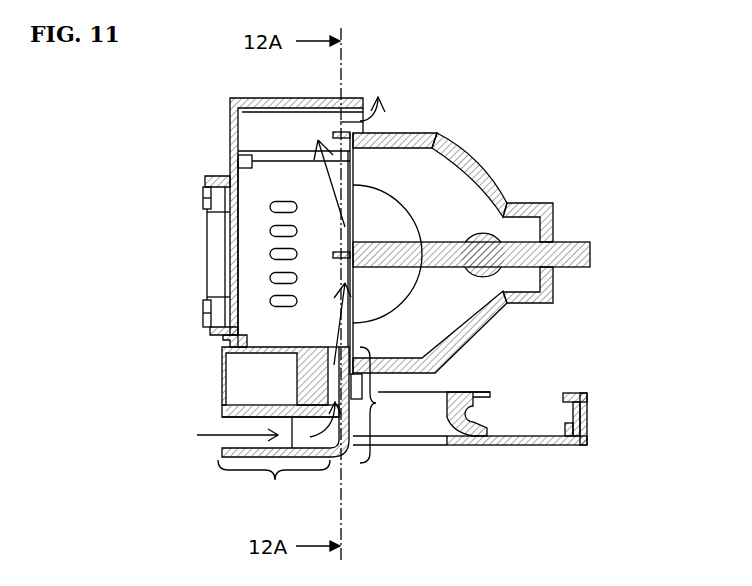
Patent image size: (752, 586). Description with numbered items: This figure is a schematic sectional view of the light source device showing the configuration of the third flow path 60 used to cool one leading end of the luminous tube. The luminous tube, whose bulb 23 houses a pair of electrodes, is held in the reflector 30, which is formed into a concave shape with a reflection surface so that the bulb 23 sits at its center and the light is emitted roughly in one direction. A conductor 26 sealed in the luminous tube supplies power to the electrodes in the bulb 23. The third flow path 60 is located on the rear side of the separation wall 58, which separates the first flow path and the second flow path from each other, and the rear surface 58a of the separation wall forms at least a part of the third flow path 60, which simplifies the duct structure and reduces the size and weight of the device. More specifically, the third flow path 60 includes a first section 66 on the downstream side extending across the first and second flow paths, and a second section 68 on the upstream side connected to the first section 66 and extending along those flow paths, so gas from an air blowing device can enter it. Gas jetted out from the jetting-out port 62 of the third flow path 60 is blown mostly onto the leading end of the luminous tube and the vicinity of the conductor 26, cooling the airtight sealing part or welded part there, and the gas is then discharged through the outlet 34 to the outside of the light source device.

The bulb 23 is at (480, 247).
The conductor 26 is at (366, 228).
The reflector 30 is at (480, 167).
The outlet 34 is at (353, 120).
The separation wall 58 is at (308, 375).
The rear surface of the separation wall 58a is at (352, 375).
The third flow path 60 is at (300, 427).
The jetting-out port 62 is at (332, 343).
The first section 66 is at (376, 403).
The second section 68 is at (283, 431).